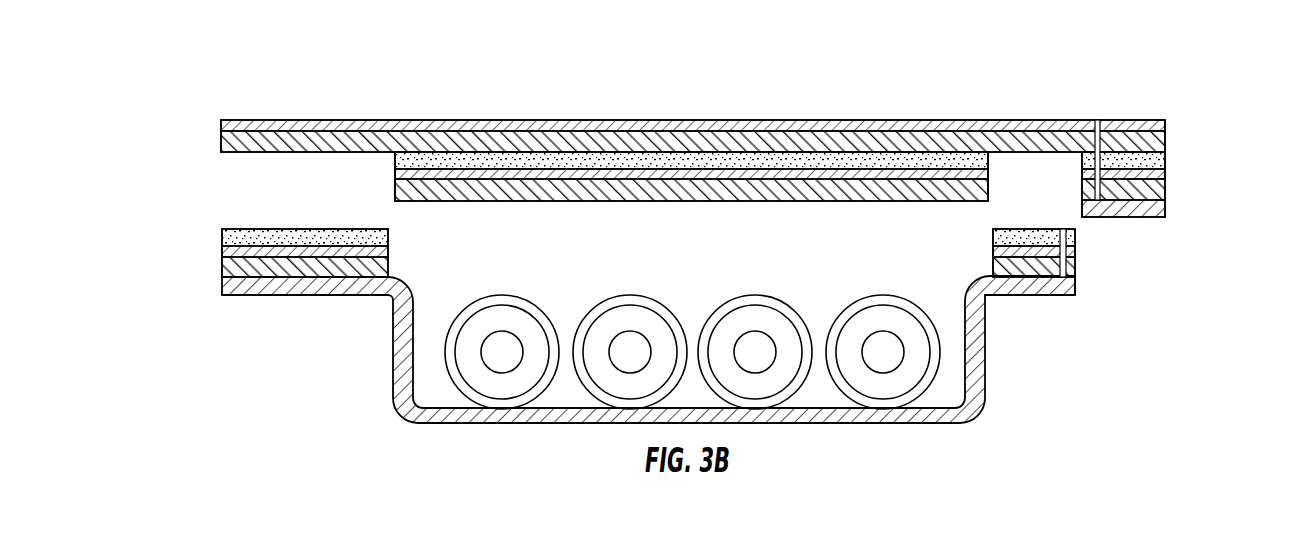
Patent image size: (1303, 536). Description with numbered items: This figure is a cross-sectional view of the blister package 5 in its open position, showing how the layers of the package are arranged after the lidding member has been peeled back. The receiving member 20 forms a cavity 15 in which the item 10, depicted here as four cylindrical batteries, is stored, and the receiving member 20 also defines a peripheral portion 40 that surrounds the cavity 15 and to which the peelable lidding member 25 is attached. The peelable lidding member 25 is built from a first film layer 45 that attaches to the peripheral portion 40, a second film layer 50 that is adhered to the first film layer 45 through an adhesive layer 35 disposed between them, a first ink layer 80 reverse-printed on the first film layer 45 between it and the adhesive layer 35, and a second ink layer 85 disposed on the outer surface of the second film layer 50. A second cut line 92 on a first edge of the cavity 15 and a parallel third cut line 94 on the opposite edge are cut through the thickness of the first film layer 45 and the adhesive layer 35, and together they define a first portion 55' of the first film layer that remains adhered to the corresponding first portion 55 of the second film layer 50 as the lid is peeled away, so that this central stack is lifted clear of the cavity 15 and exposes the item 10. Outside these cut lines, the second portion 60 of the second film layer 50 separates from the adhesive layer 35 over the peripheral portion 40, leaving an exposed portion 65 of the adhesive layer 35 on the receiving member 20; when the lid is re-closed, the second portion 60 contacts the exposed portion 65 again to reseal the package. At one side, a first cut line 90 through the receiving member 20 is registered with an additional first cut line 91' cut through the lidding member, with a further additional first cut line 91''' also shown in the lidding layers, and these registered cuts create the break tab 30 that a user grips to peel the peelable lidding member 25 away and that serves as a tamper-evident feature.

The blister package 5 is at (252, 48).
The item 10 is at (790, 393).
The cavity 15 is at (933, 237).
The receiving member 20 is at (380, 379).
The peelable lidding member 25 is at (208, 129).
The break tab 30 is at (1118, 96).
The adhesive layer 35 is at (1165, 160).
The peripheral portion 40 is at (294, 312).
The first film layer 45 is at (1165, 190).
The second film layer 50 is at (1165, 143).
The first portion of the second film layer 55 is at (690, 87).
The first portion of the first film layer 55' is at (691, 207).
The second portion of the second film layer 60 is at (390, 107).
The exposed portion of the adhesive layer 65 is at (222, 227).
The first ink layer 80 is at (1165, 175).
The second ink layer 85 is at (1165, 125).
The first cut line 90 is at (1076, 292).
The additional first cut line 91' is at (1045, 290).
The additional first cut line 91''' is at (1072, 116).
The second cut line 92 is at (986, 201).
The third cut line 94 is at (395, 202).